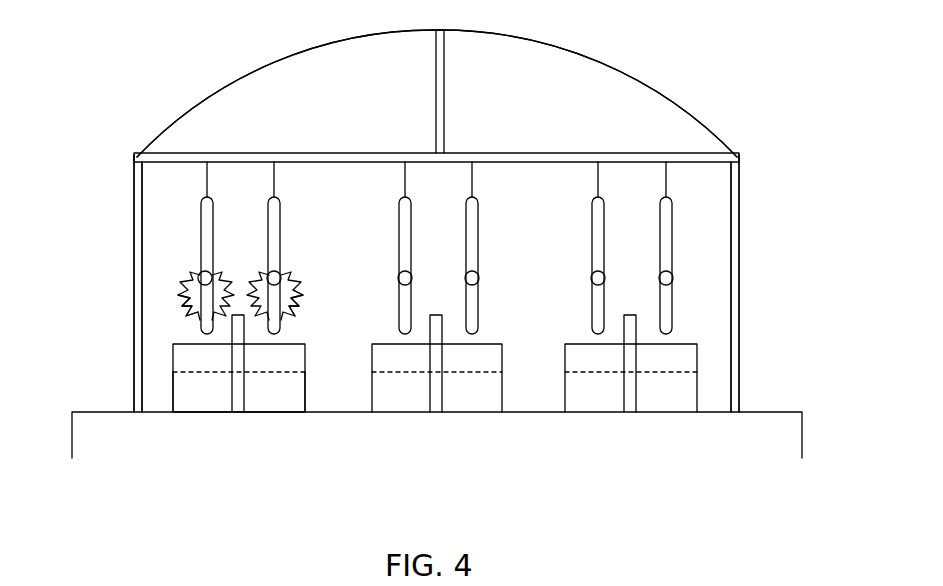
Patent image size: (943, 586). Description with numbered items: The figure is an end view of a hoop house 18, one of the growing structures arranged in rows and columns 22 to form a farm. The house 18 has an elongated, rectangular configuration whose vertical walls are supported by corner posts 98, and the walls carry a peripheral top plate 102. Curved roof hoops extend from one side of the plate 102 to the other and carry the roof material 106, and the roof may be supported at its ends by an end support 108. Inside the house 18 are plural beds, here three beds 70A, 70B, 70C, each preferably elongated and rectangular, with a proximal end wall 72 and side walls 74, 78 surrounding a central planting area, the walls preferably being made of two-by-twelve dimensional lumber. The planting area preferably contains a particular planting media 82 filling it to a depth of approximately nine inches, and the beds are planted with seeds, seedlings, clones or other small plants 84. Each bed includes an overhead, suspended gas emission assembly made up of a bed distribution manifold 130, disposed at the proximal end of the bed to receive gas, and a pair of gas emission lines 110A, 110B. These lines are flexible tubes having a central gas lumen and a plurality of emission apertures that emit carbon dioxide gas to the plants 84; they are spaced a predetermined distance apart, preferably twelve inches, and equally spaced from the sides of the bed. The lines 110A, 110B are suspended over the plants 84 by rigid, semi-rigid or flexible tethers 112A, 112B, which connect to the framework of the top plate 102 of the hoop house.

The hoop house 18 is at (757, 200).
The column of houses 22 is at (718, 97).
The corner post 98 is at (133, 266).
The top plate 102 is at (305, 153).
The end support 108 is at (444, 92).
The roof material 106 is at (244, 73).
The tether 112A is at (203, 197).
The tether 112B is at (279, 197).
The gas emission line 110A is at (196, 276).
The gas emission line 110B is at (283, 276).
The plant 84 is at (190, 315).
The bed 70A is at (217, 437).
The bed 70B is at (397, 427).
The bed 70C is at (675, 427).
The side wall 78 is at (173, 358).
The side wall 74 is at (305, 365).
The proximal end wall 72 is at (200, 405).
The planting media 82 is at (597, 375).
The bed distribution manifold 130 is at (240, 418).